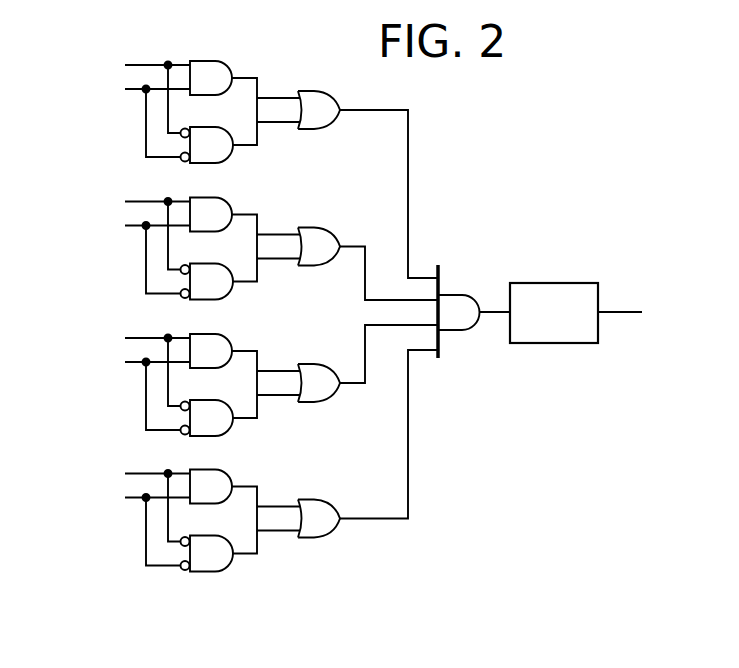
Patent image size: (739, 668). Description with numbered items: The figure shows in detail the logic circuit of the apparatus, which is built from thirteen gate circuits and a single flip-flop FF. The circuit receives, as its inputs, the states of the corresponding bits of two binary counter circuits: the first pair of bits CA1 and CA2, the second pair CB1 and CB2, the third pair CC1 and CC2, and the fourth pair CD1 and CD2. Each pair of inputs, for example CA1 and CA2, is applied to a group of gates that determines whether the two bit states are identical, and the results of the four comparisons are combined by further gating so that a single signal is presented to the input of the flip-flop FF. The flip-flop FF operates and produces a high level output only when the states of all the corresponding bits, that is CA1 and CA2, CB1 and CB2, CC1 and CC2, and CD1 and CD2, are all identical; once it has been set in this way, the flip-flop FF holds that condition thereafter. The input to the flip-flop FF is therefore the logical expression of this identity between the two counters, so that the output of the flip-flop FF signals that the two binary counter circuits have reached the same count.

The bit A output of first binary counter circuit CA1 is at (124, 65).
The bit A output of second binary counter circuit CA2 is at (124, 91).
The bit B output of first binary counter circuit CB1 is at (124, 202).
The bit B output of second binary counter circuit CB2 is at (124, 228).
The bit C output of first binary counter circuit CC1 is at (124, 338).
The bit C output of second binary counter circuit CC2 is at (124, 364).
The bit D output of first binary counter circuit CD1 is at (124, 474).
The bit D output of second binary counter circuit CD2 is at (124, 500).
The flip-flop FF is at (554, 313).